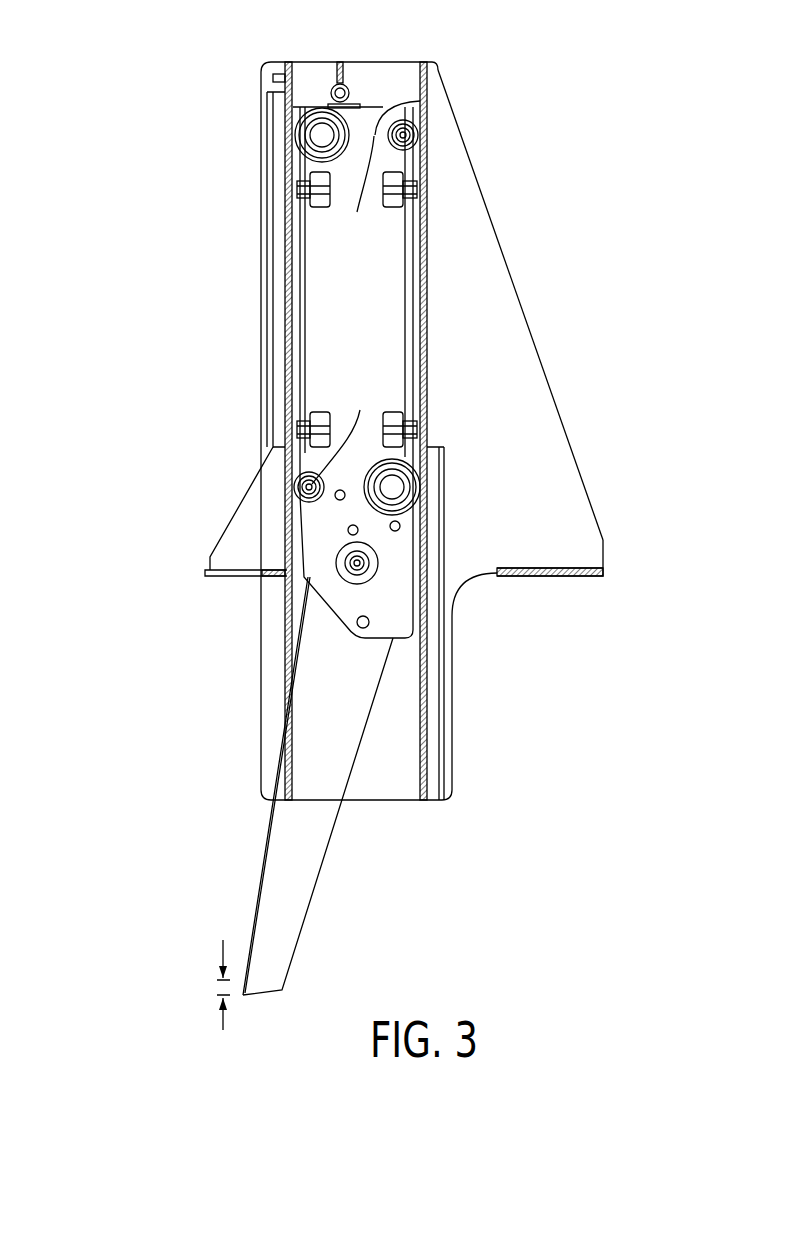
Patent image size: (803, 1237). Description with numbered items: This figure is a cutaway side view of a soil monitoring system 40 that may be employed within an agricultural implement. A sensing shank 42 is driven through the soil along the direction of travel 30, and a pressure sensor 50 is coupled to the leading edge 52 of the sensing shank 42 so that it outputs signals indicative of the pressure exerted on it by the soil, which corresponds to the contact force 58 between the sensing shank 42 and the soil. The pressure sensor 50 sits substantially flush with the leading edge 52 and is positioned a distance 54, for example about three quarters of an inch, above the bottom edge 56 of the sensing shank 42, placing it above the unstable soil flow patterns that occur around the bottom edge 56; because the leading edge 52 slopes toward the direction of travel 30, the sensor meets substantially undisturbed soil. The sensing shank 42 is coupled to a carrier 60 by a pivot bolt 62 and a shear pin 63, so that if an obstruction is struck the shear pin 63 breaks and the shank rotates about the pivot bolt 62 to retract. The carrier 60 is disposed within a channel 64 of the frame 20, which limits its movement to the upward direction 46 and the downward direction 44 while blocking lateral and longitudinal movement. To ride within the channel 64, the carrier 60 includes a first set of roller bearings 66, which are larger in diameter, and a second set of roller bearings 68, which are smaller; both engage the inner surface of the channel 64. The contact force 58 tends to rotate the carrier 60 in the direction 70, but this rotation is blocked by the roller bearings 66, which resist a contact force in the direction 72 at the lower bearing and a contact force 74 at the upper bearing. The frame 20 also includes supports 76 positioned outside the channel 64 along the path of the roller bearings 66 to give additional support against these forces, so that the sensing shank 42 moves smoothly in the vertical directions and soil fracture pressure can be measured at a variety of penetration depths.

The frame 20 is at (500, 247).
The direction of travel 30 is at (97, 480).
The soil monitoring system 40 is at (597, 262).
The sensing shank 42 is at (318, 872).
The downward direction 44 is at (155, 562).
The upward direction 46 is at (155, 440).
The pressure sensor 50 is at (247, 982).
The leading edge 52 is at (263, 853).
The distance 54 is at (222, 1030).
The bottom edge 56 is at (265, 990).
The contact force 58 is at (173, 987).
The carrier 60 is at (428, 100).
The pivot bolt 62 is at (362, 565).
The shear pin 63 is at (363, 628).
The channel 64 is at (420, 77).
The first set of roller bearings 66 is at (322, 133).
The second set of roller bearings 68 is at (383, 203).
The direction of rotation 70 is at (372, 350).
The contact force direction 72 is at (492, 487).
The contact force 74 is at (255, 120).
The frame supports 76 is at (283, 297).